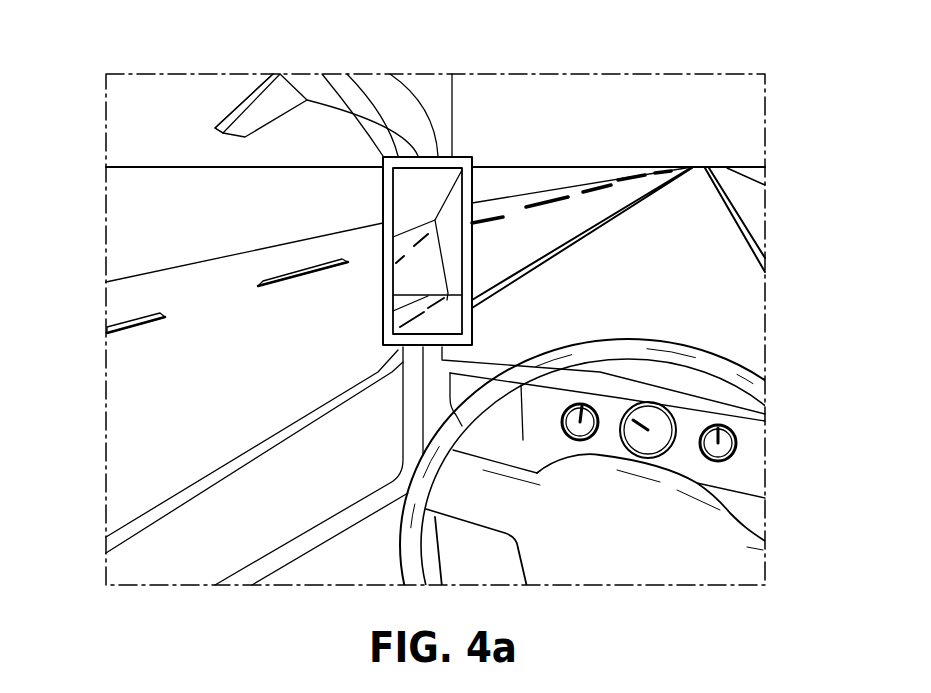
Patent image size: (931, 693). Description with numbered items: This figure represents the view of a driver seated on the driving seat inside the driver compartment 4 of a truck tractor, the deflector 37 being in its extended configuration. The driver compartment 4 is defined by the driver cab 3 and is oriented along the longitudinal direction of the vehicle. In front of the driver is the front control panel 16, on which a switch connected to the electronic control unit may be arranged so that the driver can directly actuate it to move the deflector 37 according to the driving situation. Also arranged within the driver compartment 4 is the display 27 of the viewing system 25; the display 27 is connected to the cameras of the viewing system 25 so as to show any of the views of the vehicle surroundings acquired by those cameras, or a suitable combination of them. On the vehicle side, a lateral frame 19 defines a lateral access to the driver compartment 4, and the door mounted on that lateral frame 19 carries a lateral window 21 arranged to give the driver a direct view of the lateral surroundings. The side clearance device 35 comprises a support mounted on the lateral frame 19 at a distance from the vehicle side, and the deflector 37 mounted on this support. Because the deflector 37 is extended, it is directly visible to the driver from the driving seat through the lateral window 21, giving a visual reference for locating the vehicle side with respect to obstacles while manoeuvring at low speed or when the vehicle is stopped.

The driver cab 3 is at (453, 179).
The driver compartment 4 is at (720, 418).
The front control panel 16 is at (738, 508).
The lateral frame 19 is at (403, 120).
The lateral window 21 is at (133, 410).
The viewing system 25 is at (264, 187).
The display 27 is at (470, 193).
The side clearance device 35 is at (243, 93).
The deflector 37 is at (227, 128).